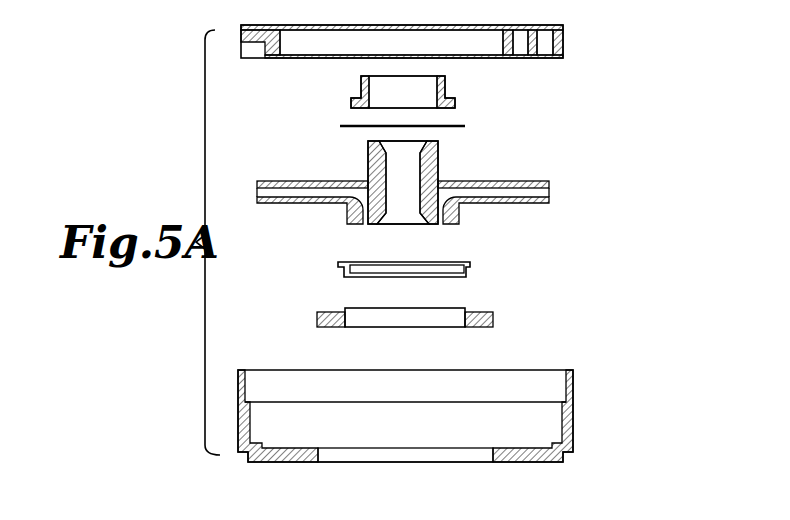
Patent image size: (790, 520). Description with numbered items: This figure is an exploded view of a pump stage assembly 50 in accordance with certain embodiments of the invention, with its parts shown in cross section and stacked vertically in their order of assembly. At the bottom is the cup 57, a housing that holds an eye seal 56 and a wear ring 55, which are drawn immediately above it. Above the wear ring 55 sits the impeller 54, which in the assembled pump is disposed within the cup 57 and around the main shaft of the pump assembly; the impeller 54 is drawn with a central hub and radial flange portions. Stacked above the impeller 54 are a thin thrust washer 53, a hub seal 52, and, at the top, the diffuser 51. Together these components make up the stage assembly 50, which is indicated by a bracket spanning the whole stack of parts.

The stage assembly 50 is at (129, 88).
The diffuser 51 is at (565, 43).
The hub seal 52 is at (446, 95).
The thrust washer 53 is at (452, 128).
The impeller 54 is at (552, 196).
The wear ring 55 is at (470, 273).
The eye seal 56 is at (493, 320).
The cup 57 is at (575, 415).